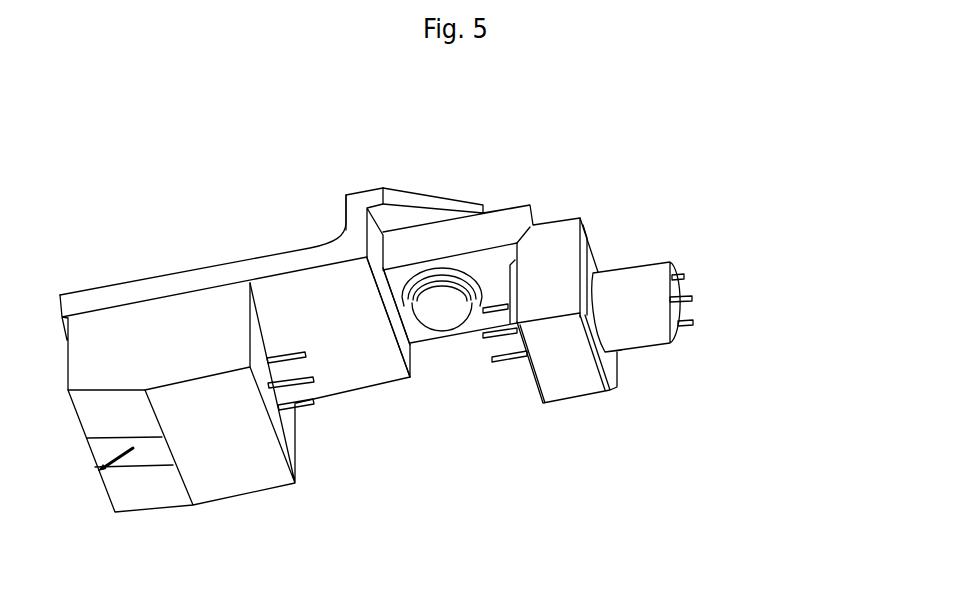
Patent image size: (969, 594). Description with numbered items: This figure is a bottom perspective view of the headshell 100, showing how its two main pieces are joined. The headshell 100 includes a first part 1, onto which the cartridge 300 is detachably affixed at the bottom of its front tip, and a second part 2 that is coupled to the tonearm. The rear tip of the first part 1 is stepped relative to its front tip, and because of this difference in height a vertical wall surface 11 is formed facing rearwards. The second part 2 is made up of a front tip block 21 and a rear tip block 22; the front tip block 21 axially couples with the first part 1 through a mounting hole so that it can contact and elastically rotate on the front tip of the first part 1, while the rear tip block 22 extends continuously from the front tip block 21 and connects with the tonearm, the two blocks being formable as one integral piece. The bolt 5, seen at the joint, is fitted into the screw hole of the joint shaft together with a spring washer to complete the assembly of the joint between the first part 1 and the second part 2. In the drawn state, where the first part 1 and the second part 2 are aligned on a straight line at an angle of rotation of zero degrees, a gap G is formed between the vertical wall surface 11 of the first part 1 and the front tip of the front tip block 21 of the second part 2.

The headshell 100 is at (180, 72).
The first part 1 is at (296, 245).
The vertical wall surface 11 is at (373, 243).
The cartridge 300 is at (153, 327).
The second part 2 is at (532, 202).
The front tip block 21 is at (413, 335).
The rear tip block 22 is at (570, 360).
The bolt 5 is at (450, 322).
The gap G is at (388, 303).